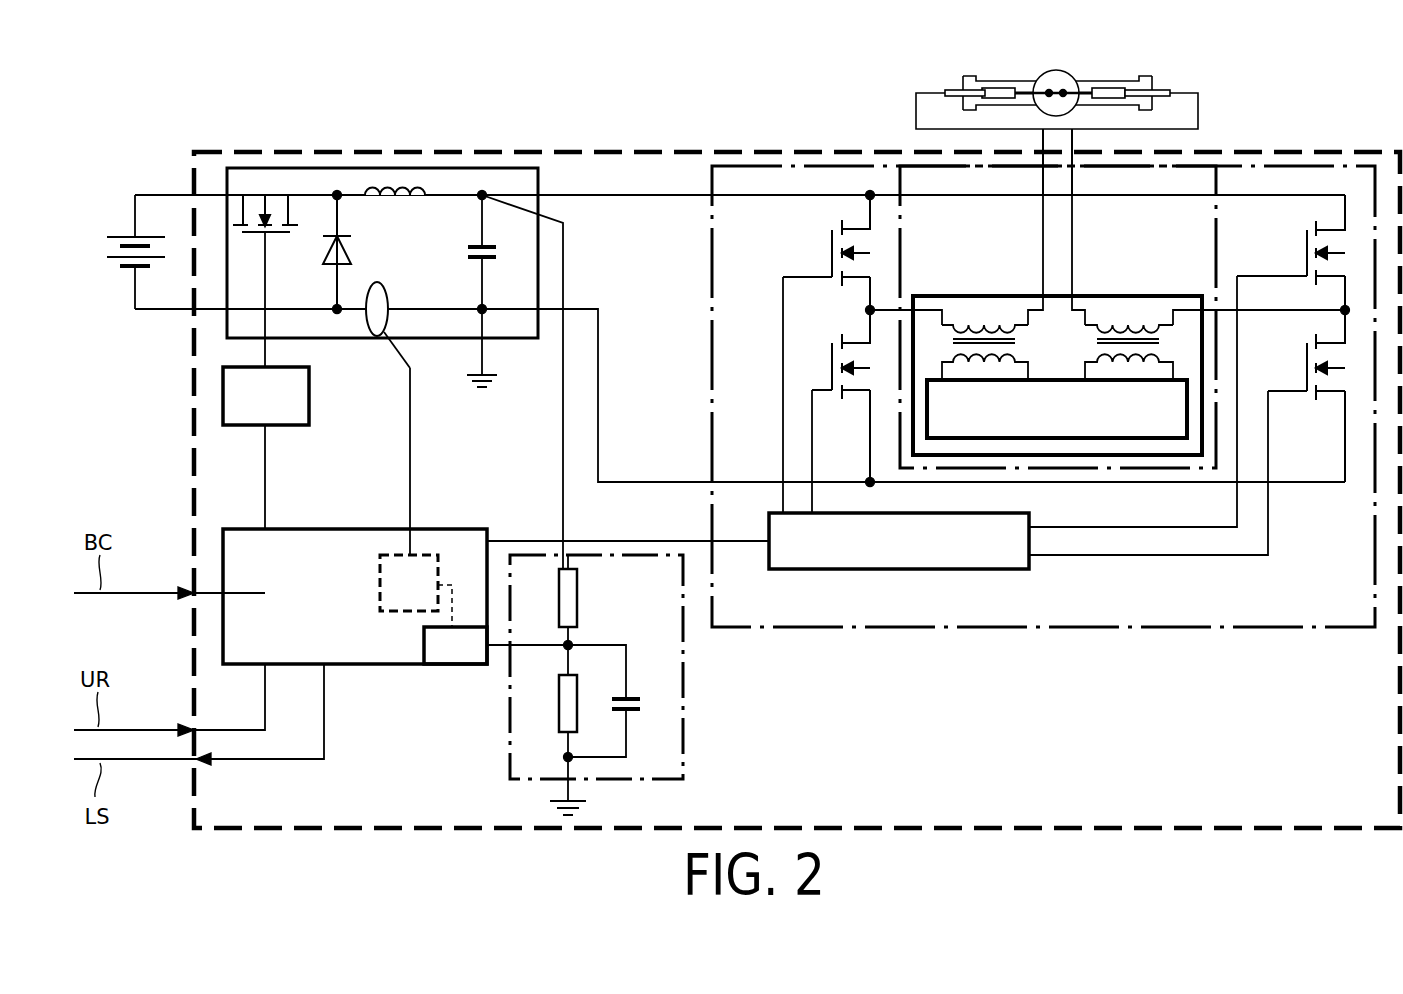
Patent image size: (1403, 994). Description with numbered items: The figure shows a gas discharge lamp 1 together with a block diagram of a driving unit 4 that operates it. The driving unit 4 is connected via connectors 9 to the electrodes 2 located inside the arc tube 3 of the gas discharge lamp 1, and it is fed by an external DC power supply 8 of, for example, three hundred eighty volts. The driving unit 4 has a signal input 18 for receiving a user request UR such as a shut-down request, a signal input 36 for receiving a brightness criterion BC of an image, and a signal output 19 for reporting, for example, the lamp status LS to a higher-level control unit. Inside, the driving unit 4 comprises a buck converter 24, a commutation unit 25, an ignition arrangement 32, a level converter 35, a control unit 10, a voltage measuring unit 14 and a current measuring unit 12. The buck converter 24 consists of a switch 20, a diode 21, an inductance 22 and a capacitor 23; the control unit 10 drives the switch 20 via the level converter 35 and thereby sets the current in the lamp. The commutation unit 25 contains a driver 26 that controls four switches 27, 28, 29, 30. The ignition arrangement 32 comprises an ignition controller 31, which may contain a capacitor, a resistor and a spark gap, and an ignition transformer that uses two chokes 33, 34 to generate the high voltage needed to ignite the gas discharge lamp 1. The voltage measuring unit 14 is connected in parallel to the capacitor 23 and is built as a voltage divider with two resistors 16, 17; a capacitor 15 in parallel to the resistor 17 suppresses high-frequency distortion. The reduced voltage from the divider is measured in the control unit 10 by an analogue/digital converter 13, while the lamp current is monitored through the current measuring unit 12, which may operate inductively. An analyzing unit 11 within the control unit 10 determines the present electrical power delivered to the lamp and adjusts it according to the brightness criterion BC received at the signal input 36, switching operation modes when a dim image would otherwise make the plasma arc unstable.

The gas discharge lamp 1 is at (1064, 89).
The electrodes 2 is at (1062, 88).
The arc tube 3 is at (1047, 88).
The driving unit 4 is at (625, 148).
The power supply 8 is at (114, 236).
The connectors 9 is at (1043, 180).
The control unit 10 is at (283, 573).
The analyzing unit 11 is at (396, 595).
The current measuring unit 12 is at (365, 322).
The analogue/digital converter 13 is at (428, 652).
The voltage measuring unit 14 is at (683, 745).
The capacitor 15 is at (642, 701).
The resistor 16 is at (578, 596).
The resistor 17 is at (559, 708).
The signal input 18 is at (188, 727).
The signal output 19 is at (202, 763).
The switch 20 is at (243, 208).
The diode 21 is at (356, 243).
The inductance 22 is at (387, 188).
The capacitor 23 is at (467, 250).
The buck converter 24 is at (516, 167).
The commutation unit 25 is at (1305, 597).
The driver 26 is at (885, 553).
The switch 27 is at (832, 245).
The switch 28 is at (832, 358).
The switch 29 is at (1307, 245).
The switch 30 is at (1307, 362).
The ignition controller 31 is at (1044, 421).
The ignition arrangement 32 is at (1017, 296).
The choke 33 is at (965, 325).
The choke 34 is at (1122, 325).
The level converter 35 is at (252, 408).
The signal input 36 is at (188, 590).